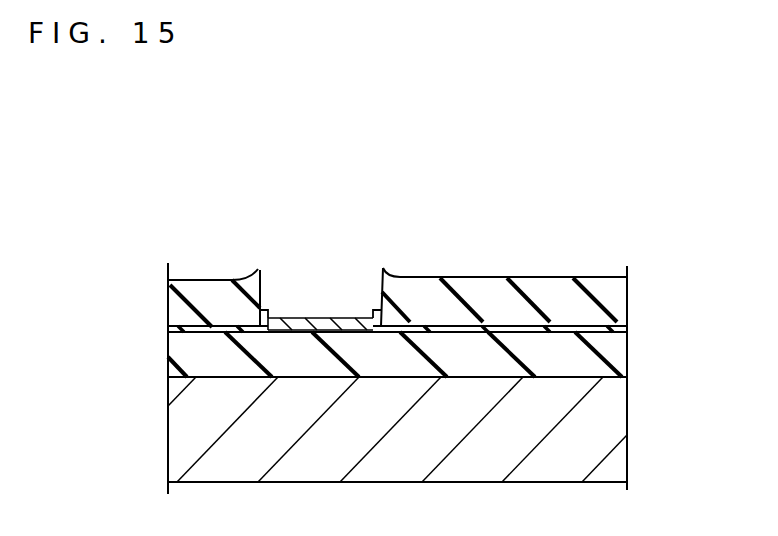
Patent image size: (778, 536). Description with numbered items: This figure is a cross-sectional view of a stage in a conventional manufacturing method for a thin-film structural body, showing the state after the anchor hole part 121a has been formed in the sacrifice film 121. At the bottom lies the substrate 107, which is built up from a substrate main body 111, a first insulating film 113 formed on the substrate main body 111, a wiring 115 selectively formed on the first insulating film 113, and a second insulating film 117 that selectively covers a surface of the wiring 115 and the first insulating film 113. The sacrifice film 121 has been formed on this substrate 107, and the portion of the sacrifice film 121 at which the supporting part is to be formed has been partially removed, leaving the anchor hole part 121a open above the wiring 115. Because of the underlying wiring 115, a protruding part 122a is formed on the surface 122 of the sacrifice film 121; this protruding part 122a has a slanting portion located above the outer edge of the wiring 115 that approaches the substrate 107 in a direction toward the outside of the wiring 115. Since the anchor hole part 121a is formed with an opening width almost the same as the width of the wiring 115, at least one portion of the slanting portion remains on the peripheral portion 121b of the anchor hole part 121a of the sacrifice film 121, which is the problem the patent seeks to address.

The substrate 107 is at (166, 427).
The substrate main body 111 is at (628, 423).
The first insulating film 113 is at (628, 350).
The wiring 115 is at (293, 316).
The second insulating film 117 is at (628, 323).
The sacrifice film 121 is at (168, 308).
The anchor hole part 121a is at (378, 309).
The peripheral portion 121b is at (384, 268).
The surface of the sacrifice film 122 is at (528, 277).
The protruding part 122a is at (256, 268).